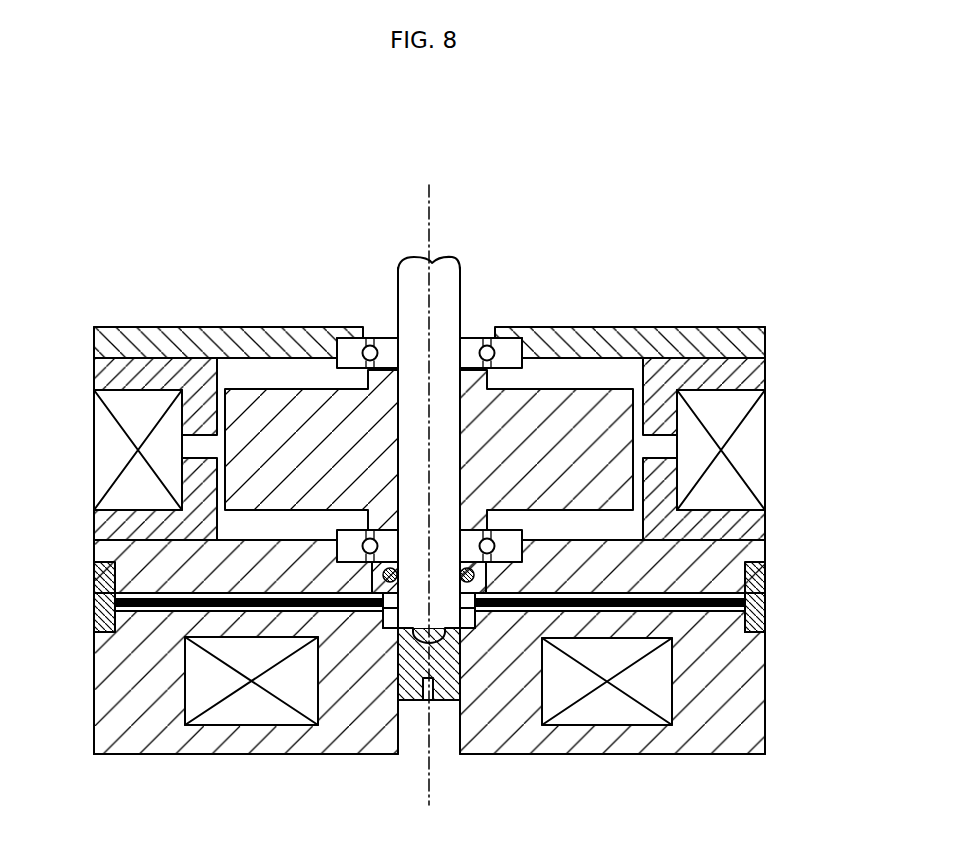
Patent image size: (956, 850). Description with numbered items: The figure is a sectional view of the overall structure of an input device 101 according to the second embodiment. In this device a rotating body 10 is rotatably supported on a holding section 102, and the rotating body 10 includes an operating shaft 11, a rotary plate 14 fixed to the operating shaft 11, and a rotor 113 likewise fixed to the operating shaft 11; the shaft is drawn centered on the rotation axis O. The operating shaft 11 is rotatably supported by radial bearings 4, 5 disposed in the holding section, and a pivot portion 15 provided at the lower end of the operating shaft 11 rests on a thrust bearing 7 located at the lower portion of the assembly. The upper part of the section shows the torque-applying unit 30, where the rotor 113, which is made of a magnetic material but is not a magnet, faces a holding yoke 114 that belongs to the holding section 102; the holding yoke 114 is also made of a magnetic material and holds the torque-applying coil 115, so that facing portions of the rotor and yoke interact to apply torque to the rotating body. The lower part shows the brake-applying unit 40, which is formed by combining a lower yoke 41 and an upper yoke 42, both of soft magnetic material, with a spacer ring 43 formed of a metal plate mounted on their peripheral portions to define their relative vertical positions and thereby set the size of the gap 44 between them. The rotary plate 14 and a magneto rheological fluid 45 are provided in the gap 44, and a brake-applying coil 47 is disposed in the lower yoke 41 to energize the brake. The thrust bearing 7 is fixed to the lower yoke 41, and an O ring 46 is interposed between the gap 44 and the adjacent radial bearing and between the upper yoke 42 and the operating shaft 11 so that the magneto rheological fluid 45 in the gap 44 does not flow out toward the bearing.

The input device 101 is at (718, 230).
The holding section 102 is at (768, 726).
The rotating body 10 is at (475, 270).
The operating shaft 11 is at (410, 290).
The rotation axis O is at (430, 480).
The radial bearing 4 is at (347, 352).
The radial bearing 5 is at (520, 543).
The torque-applying unit 30 is at (76, 330).
The brake-applying unit 40 is at (76, 745).
The rotor 113 is at (583, 400).
The holding yoke 114 is at (722, 385).
The torque-applying coil 115 is at (745, 440).
The upper yoke 42 is at (755, 552).
The spacer ring 43 is at (752, 603).
The gap 44 is at (745, 615).
The magneto rheological fluid 45 is at (152, 612).
The rotary plate 14 is at (607, 605).
The lower yoke 41 is at (168, 745).
The O ring 46 is at (378, 615).
The brake-applying coil 47 is at (242, 710).
The thrust bearing 7 is at (400, 665).
The pivot portion 15 is at (440, 630).